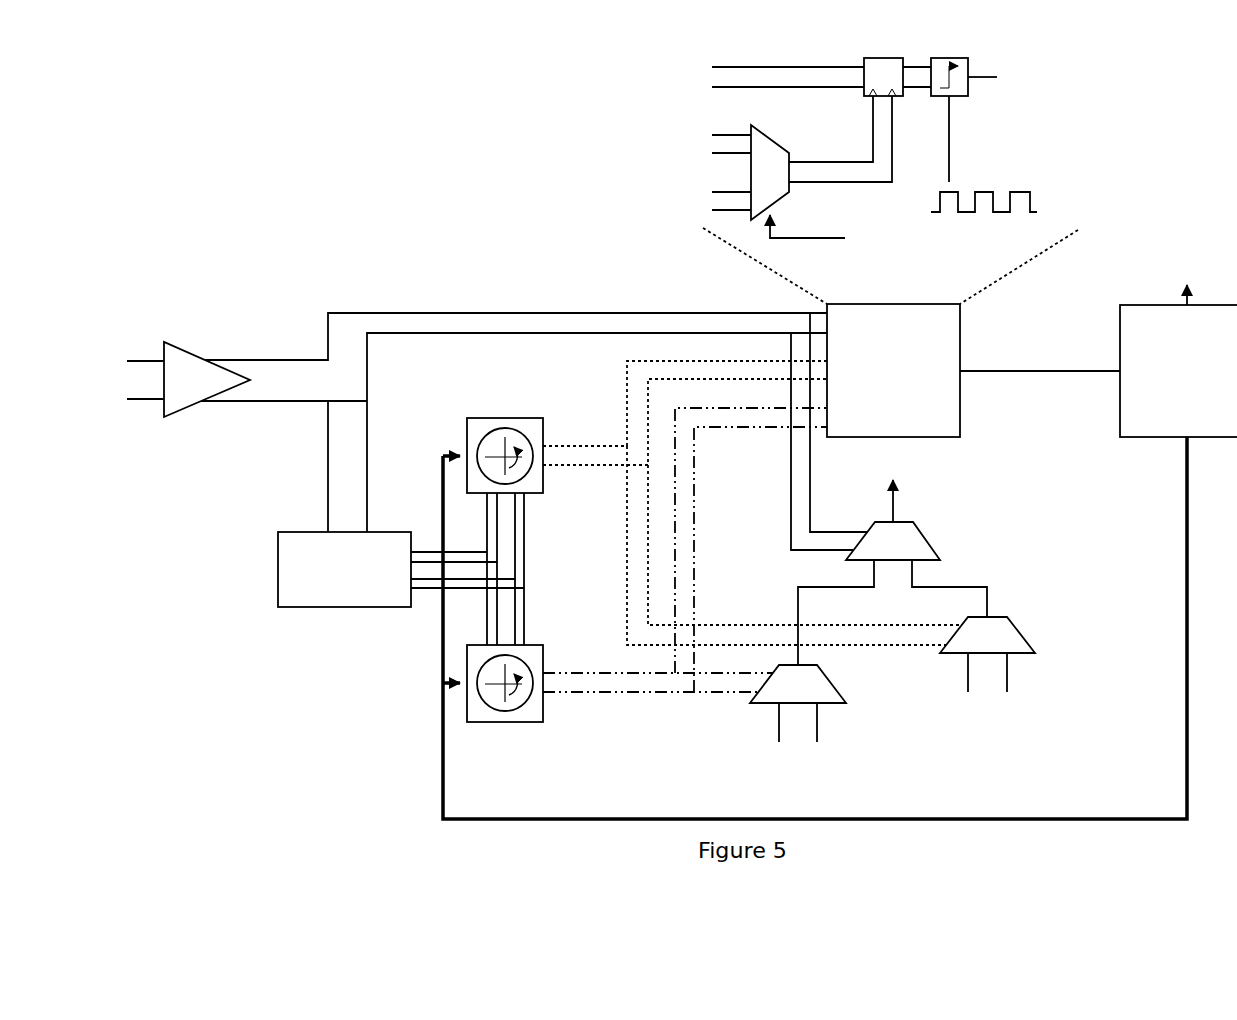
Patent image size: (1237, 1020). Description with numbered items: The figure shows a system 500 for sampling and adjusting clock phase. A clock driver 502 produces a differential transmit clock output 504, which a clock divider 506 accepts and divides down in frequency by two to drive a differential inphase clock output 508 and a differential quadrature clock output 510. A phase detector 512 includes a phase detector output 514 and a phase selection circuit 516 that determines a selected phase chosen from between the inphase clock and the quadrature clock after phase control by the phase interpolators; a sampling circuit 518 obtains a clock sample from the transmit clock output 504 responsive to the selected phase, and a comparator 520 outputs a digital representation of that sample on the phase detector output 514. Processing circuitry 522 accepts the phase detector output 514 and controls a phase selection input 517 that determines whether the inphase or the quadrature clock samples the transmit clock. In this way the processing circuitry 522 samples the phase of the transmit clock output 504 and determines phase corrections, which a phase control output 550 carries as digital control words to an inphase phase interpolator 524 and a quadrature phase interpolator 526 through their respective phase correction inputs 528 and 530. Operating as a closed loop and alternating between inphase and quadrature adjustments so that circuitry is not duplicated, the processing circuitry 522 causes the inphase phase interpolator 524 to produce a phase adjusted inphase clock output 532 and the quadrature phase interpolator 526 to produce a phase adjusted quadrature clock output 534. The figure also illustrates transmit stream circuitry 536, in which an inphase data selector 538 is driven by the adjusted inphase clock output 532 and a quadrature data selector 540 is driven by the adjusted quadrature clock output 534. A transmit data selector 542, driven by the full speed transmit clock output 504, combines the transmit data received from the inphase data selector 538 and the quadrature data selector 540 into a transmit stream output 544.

The system 500 is at (130, 98).
The clock driver 502 is at (175, 417).
The transmit clock output 504 is at (275, 402).
The clock divider 506 is at (313, 608).
The inphase clock output 508 is at (428, 550).
The quadrature clock output 510 is at (427, 590).
The phase detector 512 is at (890, 332).
The phase detector output 514 is at (1070, 371).
The phase selection circuit 516 is at (775, 150).
The phase selection input 517 is at (803, 237).
The sampling circuit 518 is at (872, 96).
The comparator 520 is at (938, 97).
The processing circuitry 522 is at (1178, 344).
The inphase phase interpolator 524 is at (485, 418).
The quadrature phase interpolator 526 is at (533, 645).
The phase correction input 528 is at (463, 452).
The phase correction input 530 is at (462, 690).
The phase adjusted inphase clock output 532 is at (553, 442).
The phase adjusted quadrature clock output 534 is at (553, 670).
The transmit stream circuitry 536 is at (1012, 504).
The inphase data selector 538 is at (1007, 633).
The quadrature data selector 540 is at (822, 697).
The transmit data selector 542 is at (922, 540).
The transmit stream output 544 is at (897, 512).
The phase control output 550 is at (1185, 550).